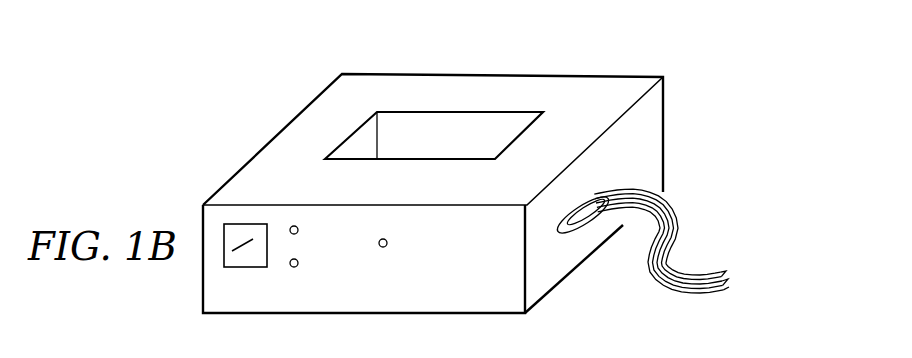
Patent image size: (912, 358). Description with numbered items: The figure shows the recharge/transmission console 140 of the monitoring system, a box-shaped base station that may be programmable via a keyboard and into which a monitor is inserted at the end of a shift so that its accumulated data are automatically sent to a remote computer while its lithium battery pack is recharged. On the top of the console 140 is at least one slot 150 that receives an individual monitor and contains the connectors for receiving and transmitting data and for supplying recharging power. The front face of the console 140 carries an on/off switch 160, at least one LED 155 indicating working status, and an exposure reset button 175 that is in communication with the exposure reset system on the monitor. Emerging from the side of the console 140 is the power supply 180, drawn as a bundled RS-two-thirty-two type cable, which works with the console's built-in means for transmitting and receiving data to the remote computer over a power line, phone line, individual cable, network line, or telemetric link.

The recharge/transmission console 140 is at (648, 63).
The slot 150 is at (443, 121).
The LED 155 is at (299, 226).
The on/off switch 160 is at (245, 268).
The exposure reset button 175 is at (388, 243).
The power supply 180 is at (688, 258).